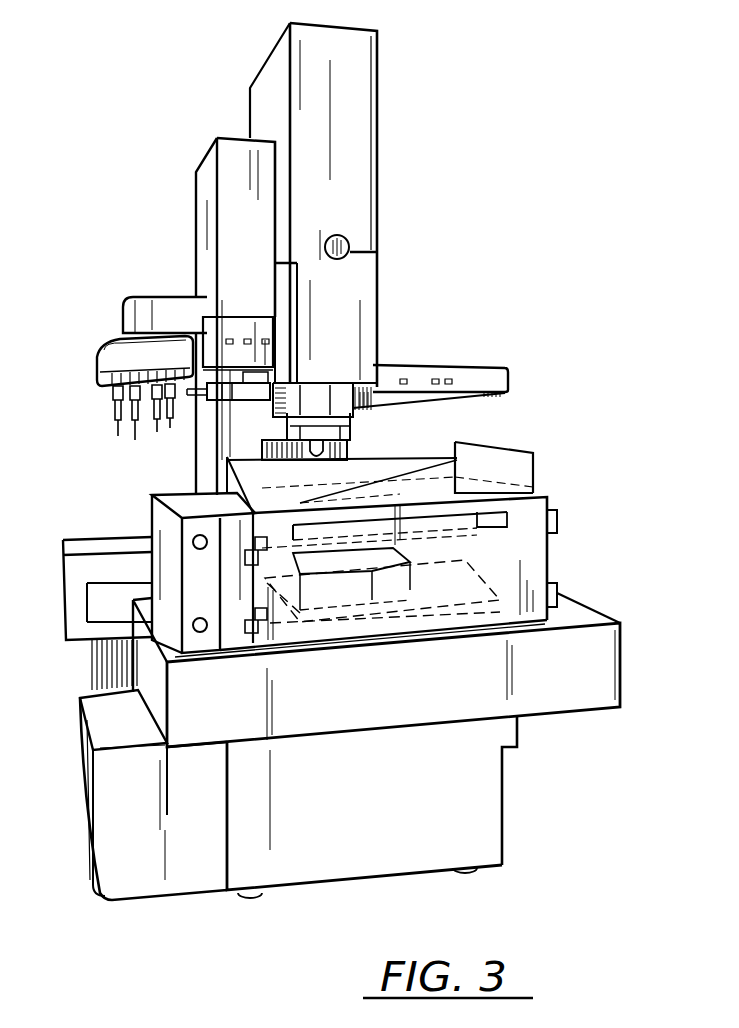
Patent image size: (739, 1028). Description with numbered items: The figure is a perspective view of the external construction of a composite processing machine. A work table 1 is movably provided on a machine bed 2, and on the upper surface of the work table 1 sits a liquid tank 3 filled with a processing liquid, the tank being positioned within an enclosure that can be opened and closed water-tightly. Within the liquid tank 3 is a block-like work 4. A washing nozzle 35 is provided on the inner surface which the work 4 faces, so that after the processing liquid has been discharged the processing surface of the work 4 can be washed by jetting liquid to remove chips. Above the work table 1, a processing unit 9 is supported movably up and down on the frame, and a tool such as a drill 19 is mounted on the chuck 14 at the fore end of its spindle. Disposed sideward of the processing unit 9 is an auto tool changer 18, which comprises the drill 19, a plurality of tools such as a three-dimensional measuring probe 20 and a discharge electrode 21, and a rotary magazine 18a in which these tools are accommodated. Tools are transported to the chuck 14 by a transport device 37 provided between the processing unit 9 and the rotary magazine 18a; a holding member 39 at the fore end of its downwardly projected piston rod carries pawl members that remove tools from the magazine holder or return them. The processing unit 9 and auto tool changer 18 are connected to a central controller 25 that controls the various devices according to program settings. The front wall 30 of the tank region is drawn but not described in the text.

The work table 1 is at (607, 657).
The machine bed 2 is at (480, 790).
The liquid tank 3 is at (552, 563).
The work 4 is at (355, 572).
The processing unit 9 is at (360, 273).
The chuck 14 is at (340, 403).
The auto tool changer 18 is at (135, 297).
The rotary magazine 18a is at (117, 357).
The drill 19 is at (362, 470).
The three-dimensional measuring probe 20 is at (135, 430).
The discharge electrode 21 is at (157, 432).
The central controller 25 is at (230, 195).
The tank front wall 30 is at (542, 547).
The washing nozzle 35 is at (510, 523).
The transport device 37 is at (243, 300).
The holding member 39 is at (252, 410).